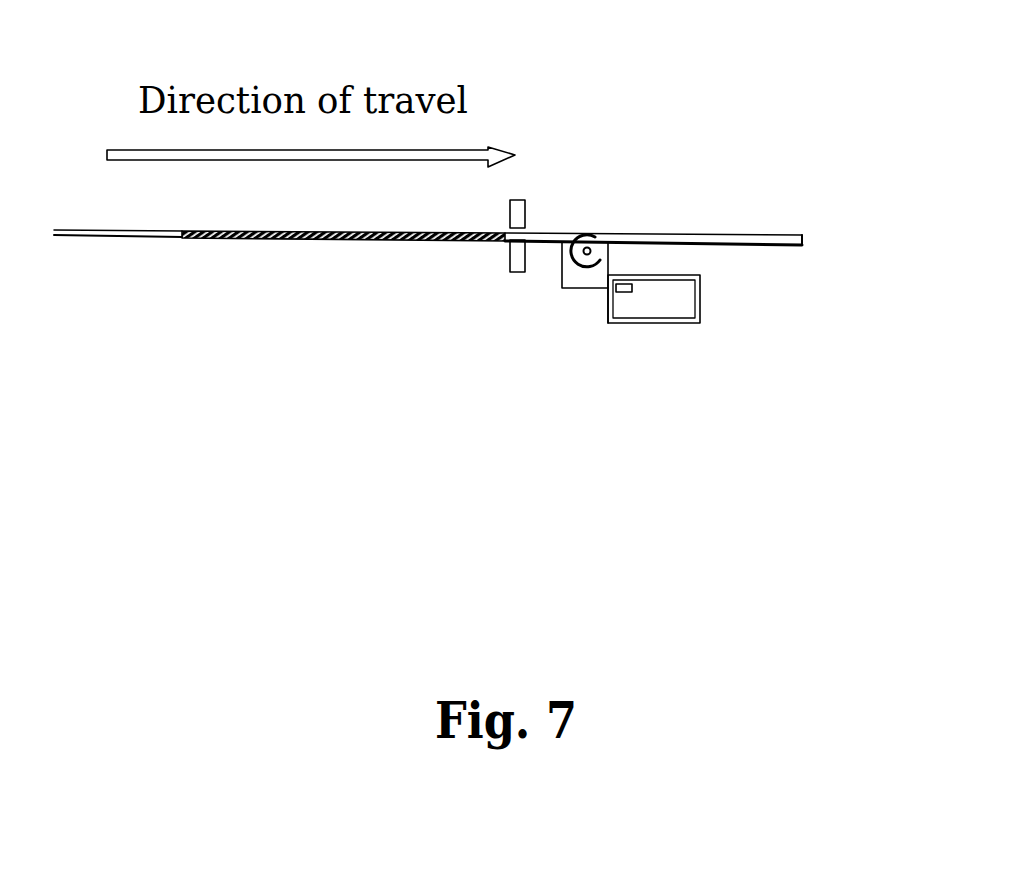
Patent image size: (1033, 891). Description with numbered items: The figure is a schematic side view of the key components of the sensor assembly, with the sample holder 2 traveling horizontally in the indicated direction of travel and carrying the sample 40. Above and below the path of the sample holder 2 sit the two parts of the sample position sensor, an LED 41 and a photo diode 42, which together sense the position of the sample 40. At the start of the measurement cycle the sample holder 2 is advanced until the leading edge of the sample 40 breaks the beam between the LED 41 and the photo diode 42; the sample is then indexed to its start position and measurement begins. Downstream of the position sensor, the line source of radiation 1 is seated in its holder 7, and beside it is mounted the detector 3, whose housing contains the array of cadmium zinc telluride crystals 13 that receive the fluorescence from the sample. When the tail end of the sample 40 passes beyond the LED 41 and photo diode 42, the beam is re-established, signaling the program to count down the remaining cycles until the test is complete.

The source of radiation 1 is at (589, 249).
The sample holder 2 is at (783, 237).
The detector 3 is at (683, 305).
The holder 7 is at (566, 271).
The cadmium zinc telluride crystals 13 is at (618, 295).
The sample 40 is at (268, 236).
The LED 41 is at (518, 216).
The photo diode 42 is at (515, 265).